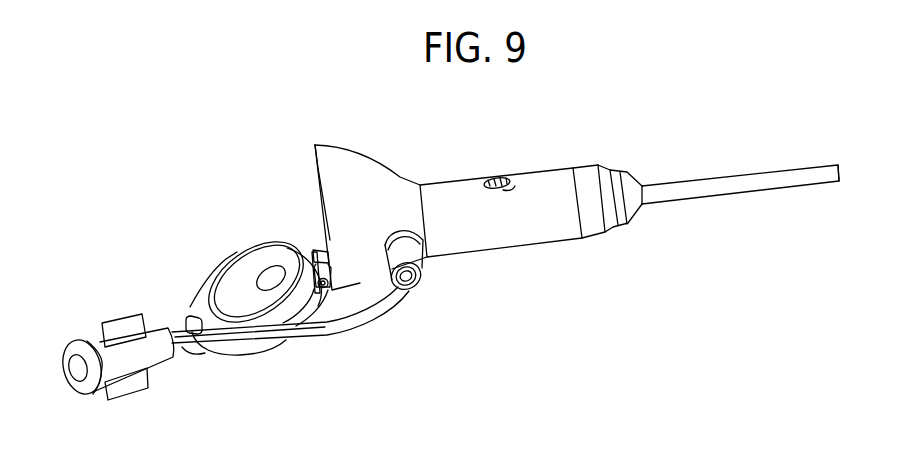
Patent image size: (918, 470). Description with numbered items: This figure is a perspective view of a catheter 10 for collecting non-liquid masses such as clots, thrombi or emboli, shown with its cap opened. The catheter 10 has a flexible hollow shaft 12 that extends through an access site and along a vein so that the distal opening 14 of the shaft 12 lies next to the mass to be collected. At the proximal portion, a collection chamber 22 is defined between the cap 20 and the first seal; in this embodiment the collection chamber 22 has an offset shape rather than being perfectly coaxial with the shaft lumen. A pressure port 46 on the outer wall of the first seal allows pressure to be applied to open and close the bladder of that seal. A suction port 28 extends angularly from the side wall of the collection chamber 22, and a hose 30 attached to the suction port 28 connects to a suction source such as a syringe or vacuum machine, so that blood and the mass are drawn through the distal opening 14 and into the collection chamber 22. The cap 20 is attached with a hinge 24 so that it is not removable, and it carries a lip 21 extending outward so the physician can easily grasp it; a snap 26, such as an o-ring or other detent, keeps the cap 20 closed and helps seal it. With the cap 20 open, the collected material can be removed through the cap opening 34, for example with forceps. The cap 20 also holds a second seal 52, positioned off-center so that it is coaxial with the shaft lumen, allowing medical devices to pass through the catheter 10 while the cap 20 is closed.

The catheter 10 is at (455, 136).
The shaft 12 is at (718, 177).
The distal opening 14 is at (842, 168).
The cap 20 is at (224, 278).
The lip 21 is at (189, 318).
The collection chamber 22 is at (355, 147).
The hinge 24 is at (321, 248).
The snap 26 is at (313, 262).
The suction port 28 is at (428, 266).
The hose 30 is at (360, 335).
The cap opening 34 is at (315, 168).
The pressure port 46 is at (513, 187).
The second seal 52 is at (273, 278).